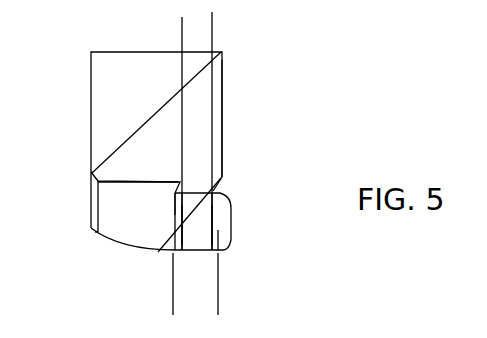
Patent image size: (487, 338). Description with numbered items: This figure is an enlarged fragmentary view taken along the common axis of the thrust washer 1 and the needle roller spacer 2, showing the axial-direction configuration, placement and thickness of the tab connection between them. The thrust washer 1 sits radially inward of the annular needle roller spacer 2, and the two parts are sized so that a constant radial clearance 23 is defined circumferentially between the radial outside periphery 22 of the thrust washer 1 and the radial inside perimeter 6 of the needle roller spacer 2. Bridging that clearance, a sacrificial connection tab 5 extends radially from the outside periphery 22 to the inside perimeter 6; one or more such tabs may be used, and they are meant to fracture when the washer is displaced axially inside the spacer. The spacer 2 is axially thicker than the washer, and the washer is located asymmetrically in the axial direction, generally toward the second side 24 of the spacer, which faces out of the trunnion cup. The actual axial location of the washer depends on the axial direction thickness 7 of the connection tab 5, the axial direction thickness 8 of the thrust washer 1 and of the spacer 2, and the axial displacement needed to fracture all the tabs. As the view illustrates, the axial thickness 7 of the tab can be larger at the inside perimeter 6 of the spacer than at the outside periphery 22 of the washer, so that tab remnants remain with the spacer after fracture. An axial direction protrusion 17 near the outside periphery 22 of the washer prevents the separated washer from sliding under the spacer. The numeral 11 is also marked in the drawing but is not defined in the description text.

The thrust washer 1 is at (218, 248).
The needle roller spacer 2 is at (102, 110).
The sacrificial connection tabs 5 is at (197, 219).
The inside perimeter 6 is at (127, 183).
The axial direction thickness 7 is at (148, 30).
The axial direction thickness 8 is at (173, 287).
The slot width 11 is at (140, 225).
The axial direction protrusion 17 is at (230, 205).
The outside periphery 22 is at (175, 194).
The radial clearance 23 is at (220, 187).
The second side 24 is at (225, 115).